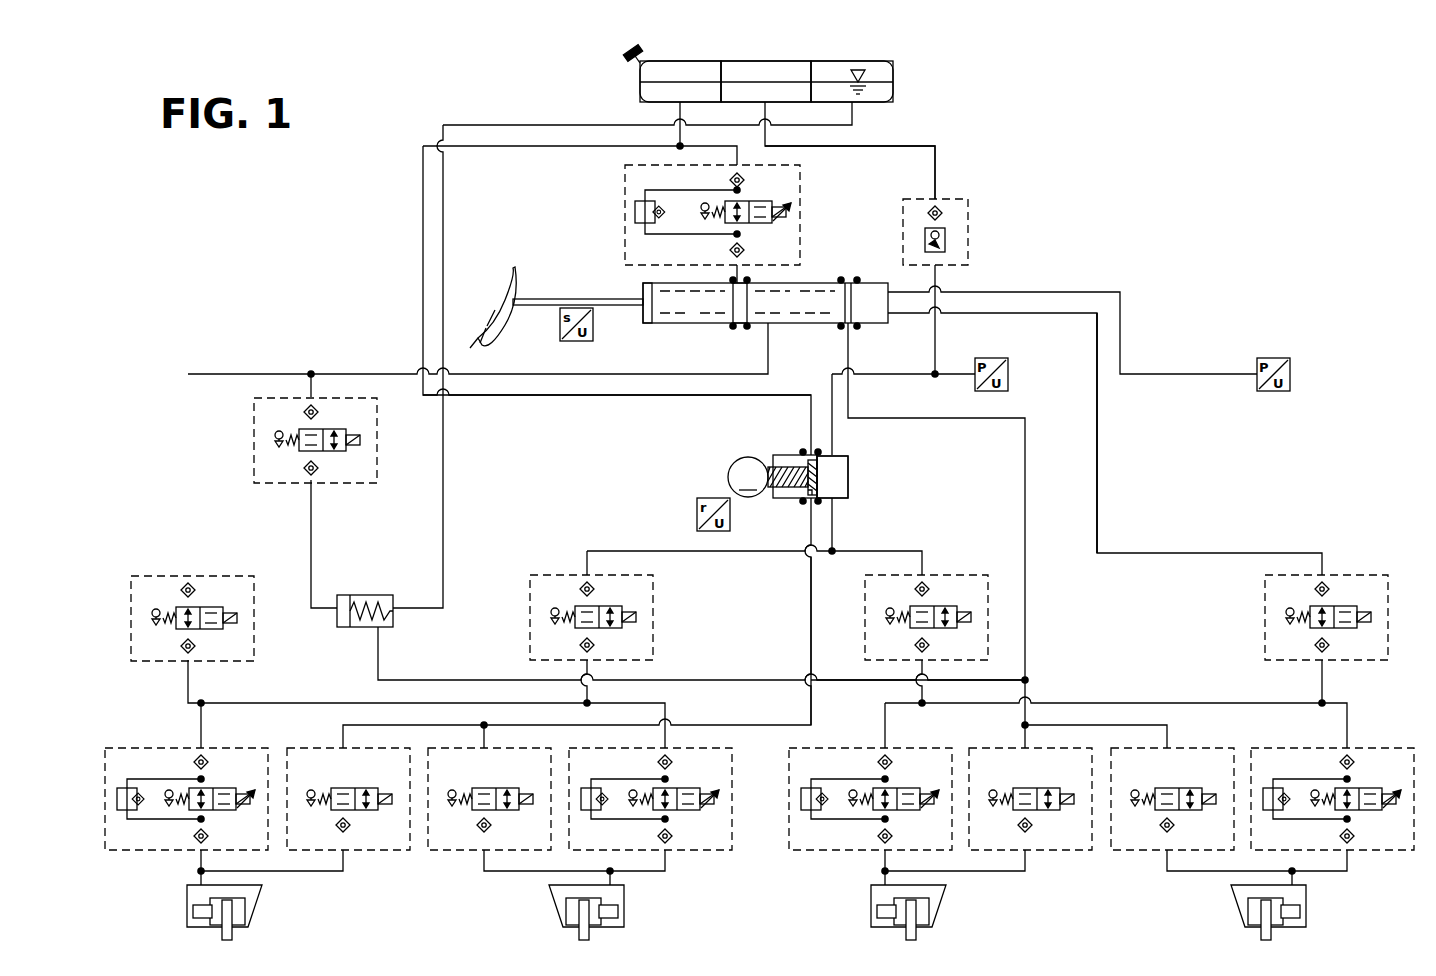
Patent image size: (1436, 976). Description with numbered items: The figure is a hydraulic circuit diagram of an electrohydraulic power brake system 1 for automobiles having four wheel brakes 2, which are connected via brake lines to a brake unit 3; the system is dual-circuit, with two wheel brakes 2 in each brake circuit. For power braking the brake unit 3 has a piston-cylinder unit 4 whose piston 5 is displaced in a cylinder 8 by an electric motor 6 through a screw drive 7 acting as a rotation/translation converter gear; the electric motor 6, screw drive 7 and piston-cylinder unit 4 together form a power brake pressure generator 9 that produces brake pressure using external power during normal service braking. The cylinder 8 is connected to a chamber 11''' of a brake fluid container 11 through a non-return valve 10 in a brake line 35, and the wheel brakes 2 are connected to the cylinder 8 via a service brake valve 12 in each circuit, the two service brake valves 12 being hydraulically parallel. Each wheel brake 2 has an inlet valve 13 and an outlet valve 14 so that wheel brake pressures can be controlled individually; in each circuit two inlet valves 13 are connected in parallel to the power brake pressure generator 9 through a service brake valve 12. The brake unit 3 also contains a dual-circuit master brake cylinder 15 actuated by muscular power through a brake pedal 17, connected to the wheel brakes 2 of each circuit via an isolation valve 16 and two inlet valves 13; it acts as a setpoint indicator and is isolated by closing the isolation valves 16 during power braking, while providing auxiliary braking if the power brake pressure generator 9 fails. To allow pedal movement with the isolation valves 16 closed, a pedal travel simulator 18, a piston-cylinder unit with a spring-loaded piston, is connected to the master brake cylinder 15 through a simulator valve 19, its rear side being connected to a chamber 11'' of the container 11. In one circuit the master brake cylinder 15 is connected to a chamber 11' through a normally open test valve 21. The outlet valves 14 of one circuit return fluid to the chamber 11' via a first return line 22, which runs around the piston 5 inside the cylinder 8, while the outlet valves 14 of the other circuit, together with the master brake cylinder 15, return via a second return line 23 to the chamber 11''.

The electrohydraulic power brake system 1 is at (1137, 168).
The brake unit 3 is at (1140, 165).
The wheel brake 2 is at (250, 905).
The piston-cylinder unit 4 is at (881, 465).
The power brake pressure generator 9 is at (812, 477).
The piston 5 is at (806, 494).
The electric motor 6 is at (728, 475).
The screw drive 7 is at (803, 455).
The cylinder 8 is at (848, 485).
The non-return valve 10 is at (948, 240).
The brake fluid container 11 is at (786, 64).
The chamber of the brake fluid container 11' is at (633, 73).
The chamber of the brake fluid container 11'' is at (906, 79).
The chamber of the brake fluid container 11''' is at (766, 81).
The service brake valve 12 is at (613, 612).
The inlet valve 13 is at (215, 790).
The outlet valve 14 is at (352, 812).
The master brake cylinder 15 is at (880, 283).
The isolation valve 16 is at (215, 607).
The brake pedal 17 is at (490, 340).
The pedal travel simulator 18 is at (368, 595).
The simulator valve 19 is at (335, 446).
The test valve 21 is at (770, 218).
The first return line 22 is at (527, 398).
The second return line 23 is at (840, 680).
The brake line 35 is at (905, 147).